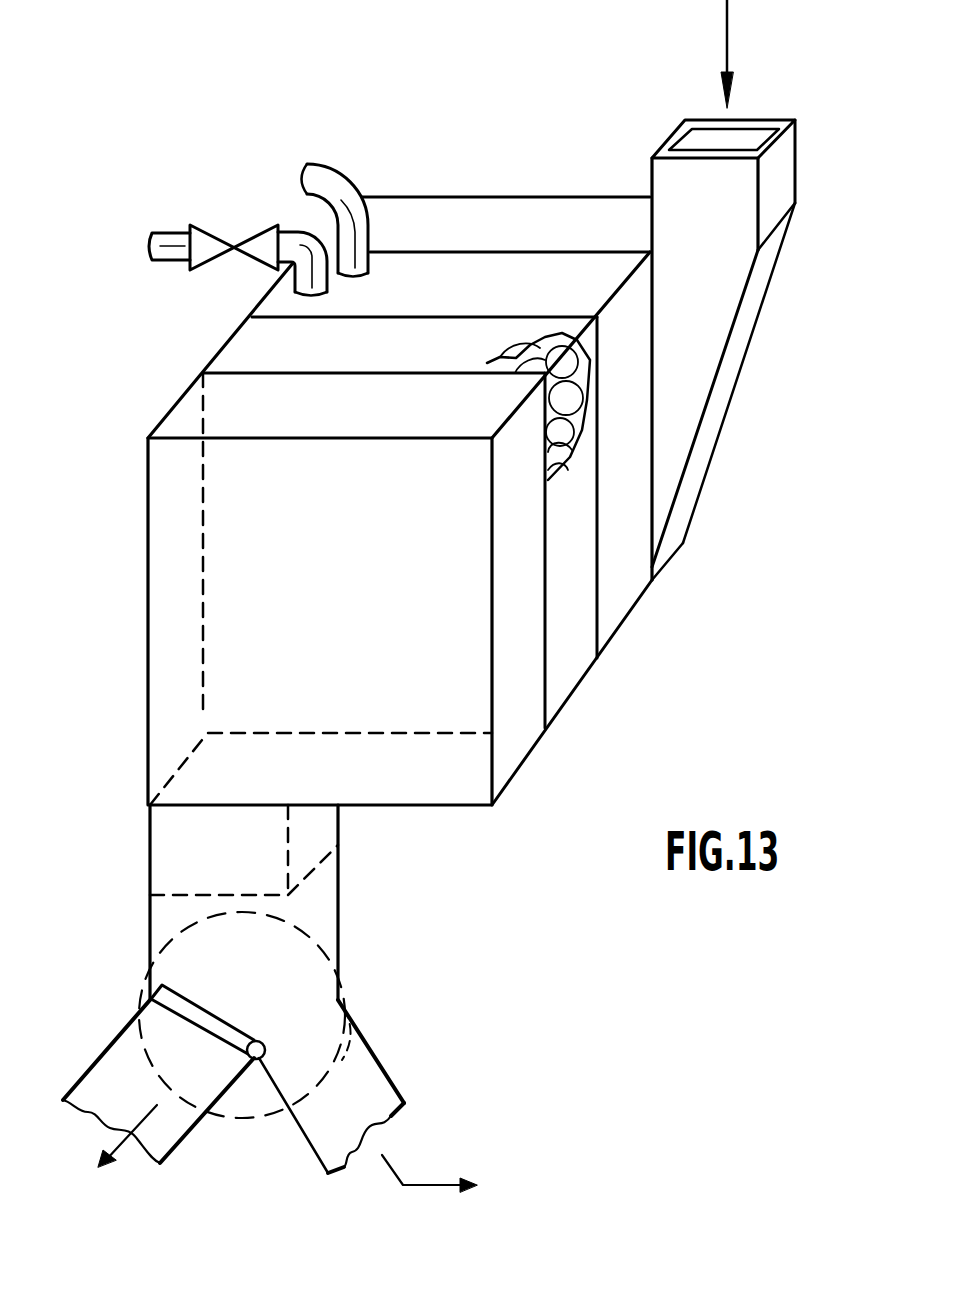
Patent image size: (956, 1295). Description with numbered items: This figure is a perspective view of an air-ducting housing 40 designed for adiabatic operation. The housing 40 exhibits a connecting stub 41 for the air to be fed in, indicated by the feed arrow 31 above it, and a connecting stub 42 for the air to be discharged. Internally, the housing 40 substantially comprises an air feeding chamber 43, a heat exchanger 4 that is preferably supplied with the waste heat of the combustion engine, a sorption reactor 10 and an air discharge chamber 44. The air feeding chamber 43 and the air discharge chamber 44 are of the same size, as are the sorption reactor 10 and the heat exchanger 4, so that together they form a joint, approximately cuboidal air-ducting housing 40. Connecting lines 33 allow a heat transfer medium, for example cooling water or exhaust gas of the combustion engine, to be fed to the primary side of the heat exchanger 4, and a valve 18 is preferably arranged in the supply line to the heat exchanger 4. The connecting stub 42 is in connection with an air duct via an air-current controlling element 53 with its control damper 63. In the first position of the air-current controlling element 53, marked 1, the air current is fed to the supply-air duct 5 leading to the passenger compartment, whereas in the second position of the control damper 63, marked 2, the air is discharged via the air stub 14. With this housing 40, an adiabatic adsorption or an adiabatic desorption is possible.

The passenger compartment 1 is at (157, 1026).
The position of control damper 2 is at (336, 1028).
The heat exchanger 4 is at (628, 603).
The supply-air duct 5 is at (367, 1128).
The sorption reactor 10 is at (570, 686).
The air stub 14 is at (167, 1133).
The valve 18 is at (210, 264).
The material feed direction 31 is at (728, 40).
The connecting lines 33 is at (294, 236).
The air-ducting housing 40 is at (449, 146).
The connecting stub 41 is at (783, 170).
The connecting stub 42 is at (340, 828).
The air feeding chamber 43 is at (557, 207).
The air discharge chamber 44 is at (232, 605).
The air-current controlling element 53 is at (345, 1040).
The control damper 63 is at (195, 990).